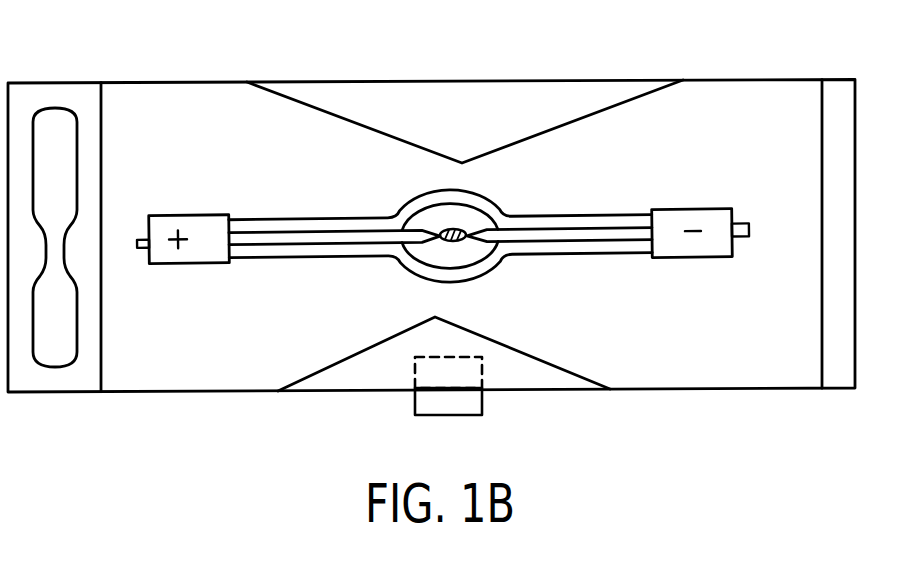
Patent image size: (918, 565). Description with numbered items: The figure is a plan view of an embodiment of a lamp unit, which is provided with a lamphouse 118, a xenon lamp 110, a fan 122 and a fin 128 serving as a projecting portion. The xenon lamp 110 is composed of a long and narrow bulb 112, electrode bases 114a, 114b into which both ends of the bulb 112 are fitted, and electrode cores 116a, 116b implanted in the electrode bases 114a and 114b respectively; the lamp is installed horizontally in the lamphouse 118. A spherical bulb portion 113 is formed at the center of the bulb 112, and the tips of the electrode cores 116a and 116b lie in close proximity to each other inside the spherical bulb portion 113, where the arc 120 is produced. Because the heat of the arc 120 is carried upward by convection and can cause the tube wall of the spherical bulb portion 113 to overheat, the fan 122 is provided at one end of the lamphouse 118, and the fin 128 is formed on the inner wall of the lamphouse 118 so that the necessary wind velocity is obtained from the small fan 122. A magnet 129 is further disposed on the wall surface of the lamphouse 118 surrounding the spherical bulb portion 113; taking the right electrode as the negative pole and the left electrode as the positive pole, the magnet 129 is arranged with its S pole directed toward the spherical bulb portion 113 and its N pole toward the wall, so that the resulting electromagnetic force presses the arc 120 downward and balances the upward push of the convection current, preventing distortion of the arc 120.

The xenon lamp 110 is at (465, 231).
The bulb 112 is at (630, 255).
The spherical bulb portion 113 is at (403, 262).
The electrode base 114a is at (707, 212).
The electrode base 114b is at (181, 212).
The electrode core 116a is at (545, 243).
The electrode core 116b is at (273, 256).
The lamphouse 118 is at (738, 79).
The arc 120 is at (461, 229).
The fan 122 is at (47, 108).
The fin 128 is at (345, 119).
The magnet 129 is at (482, 406).